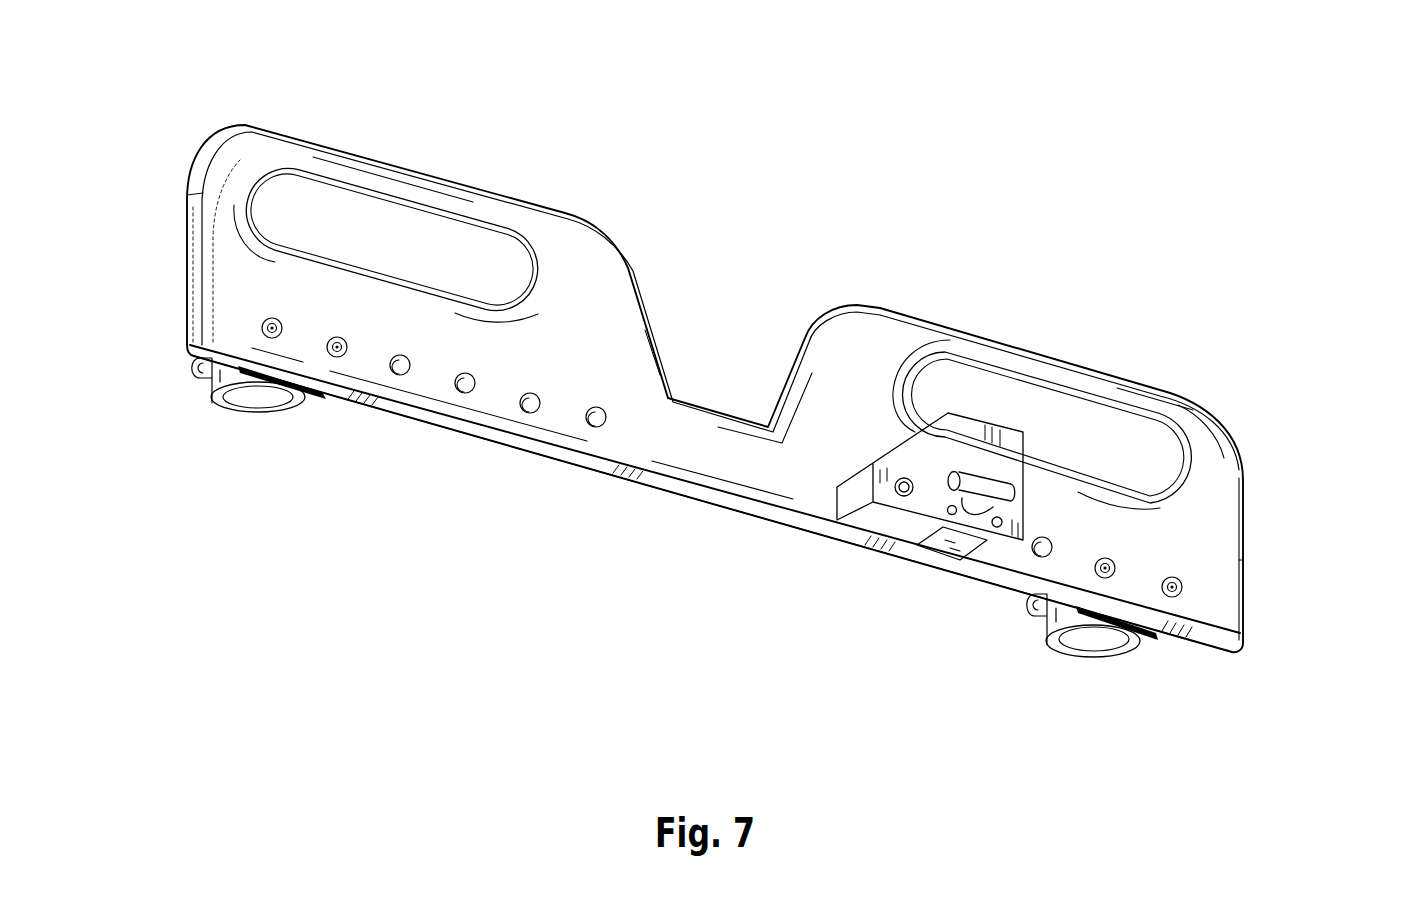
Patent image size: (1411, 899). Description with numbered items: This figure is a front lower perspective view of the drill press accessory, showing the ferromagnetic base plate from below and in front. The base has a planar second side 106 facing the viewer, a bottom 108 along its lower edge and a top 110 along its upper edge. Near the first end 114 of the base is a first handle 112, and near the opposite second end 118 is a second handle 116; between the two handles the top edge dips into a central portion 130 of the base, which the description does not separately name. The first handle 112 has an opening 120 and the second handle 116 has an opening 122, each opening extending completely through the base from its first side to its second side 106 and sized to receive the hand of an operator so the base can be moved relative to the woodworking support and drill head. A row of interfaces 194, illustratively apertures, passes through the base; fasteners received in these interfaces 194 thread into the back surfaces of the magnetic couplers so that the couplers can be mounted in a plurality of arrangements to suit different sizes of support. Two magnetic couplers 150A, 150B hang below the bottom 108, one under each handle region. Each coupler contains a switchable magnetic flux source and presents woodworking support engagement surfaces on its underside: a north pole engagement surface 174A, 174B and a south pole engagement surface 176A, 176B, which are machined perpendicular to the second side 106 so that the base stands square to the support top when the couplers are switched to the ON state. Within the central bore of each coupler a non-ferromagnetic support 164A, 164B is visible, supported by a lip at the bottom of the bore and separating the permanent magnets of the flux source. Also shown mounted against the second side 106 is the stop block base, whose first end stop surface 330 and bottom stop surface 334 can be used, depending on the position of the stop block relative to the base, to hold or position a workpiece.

The second side 106 is at (633, 382).
The bottom 108 is at (708, 520).
The top 110 is at (980, 218).
The first handle 112 is at (360, 150).
The first end 114 is at (172, 230).
The second handle 116 is at (1057, 350).
The second end 118 is at (1257, 545).
The opening 120 is at (463, 258).
The opening 122 is at (1118, 442).
The central recess 130 is at (737, 263).
The interfaces 194 is at (490, 388).
The magnetic coupler 150A is at (1094, 727).
The magnetic coupler 150B is at (249, 494).
The non-ferromagnetic support 164A is at (1085, 642).
The non-ferromagnetic support 164B is at (257, 408).
The north pole engagement surface 174A is at (1055, 643).
The north pole engagement surface 174B is at (213, 402).
The south pole engagement surface 176A is at (1127, 643).
The south pole engagement surface 176B is at (293, 413).
The first end stop surface 330 is at (825, 520).
The bottom stop surface 334 is at (908, 530).